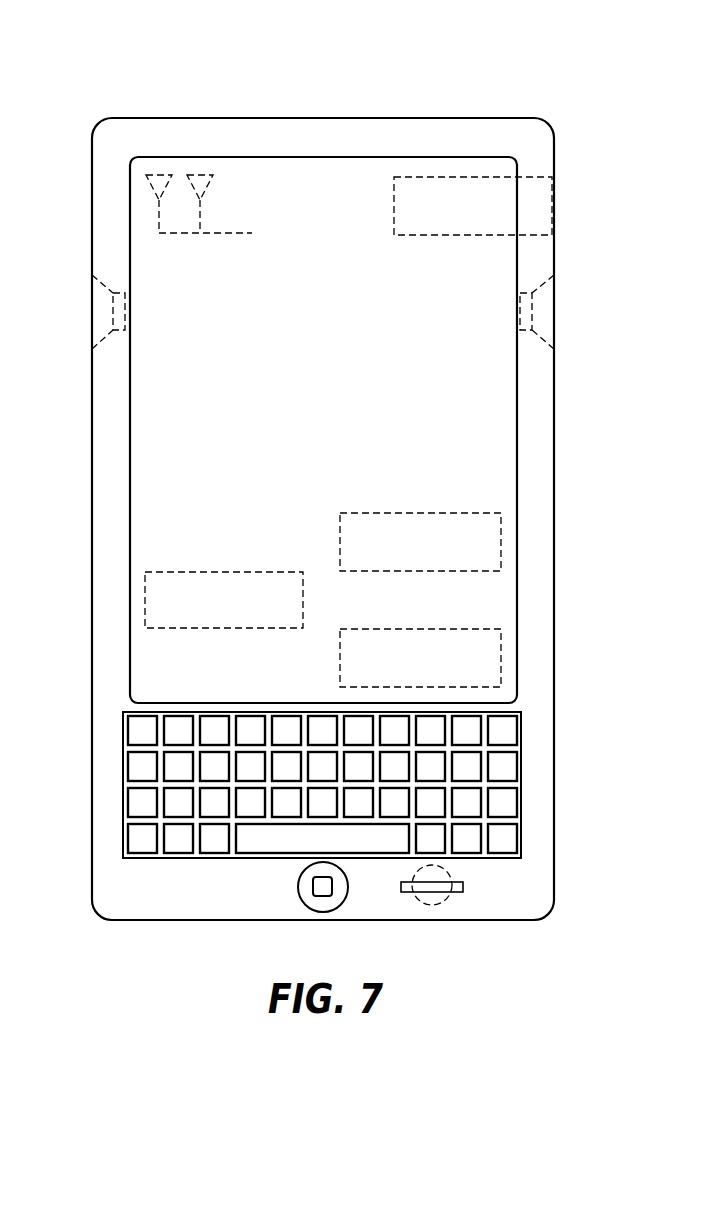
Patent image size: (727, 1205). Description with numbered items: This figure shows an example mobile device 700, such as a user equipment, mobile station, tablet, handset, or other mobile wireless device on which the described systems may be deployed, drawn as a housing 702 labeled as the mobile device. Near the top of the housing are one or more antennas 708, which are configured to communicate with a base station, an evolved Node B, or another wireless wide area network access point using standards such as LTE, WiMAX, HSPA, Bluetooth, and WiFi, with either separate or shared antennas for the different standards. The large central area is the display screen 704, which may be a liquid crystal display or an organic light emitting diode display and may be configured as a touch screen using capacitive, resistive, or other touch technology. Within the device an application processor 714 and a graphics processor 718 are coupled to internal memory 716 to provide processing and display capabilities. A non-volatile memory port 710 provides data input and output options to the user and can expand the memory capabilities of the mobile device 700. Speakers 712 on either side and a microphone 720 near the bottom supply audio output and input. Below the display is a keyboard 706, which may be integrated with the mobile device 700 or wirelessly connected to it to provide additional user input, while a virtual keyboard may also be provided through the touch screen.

The mobile device 700 is at (548, 49).
The housing / mobile device body 702 is at (322, 118).
The display screen 704 is at (497, 422).
The keyboard 706 is at (522, 785).
The antennas 708 is at (200, 173).
The non-volatile memory port 710 is at (553, 207).
The speakers 712 is at (100, 312).
The application processor 714 is at (421, 513).
The internal memory 716 is at (421, 629).
The graphics processor 718 is at (225, 572).
The microphone 720 is at (432, 907).